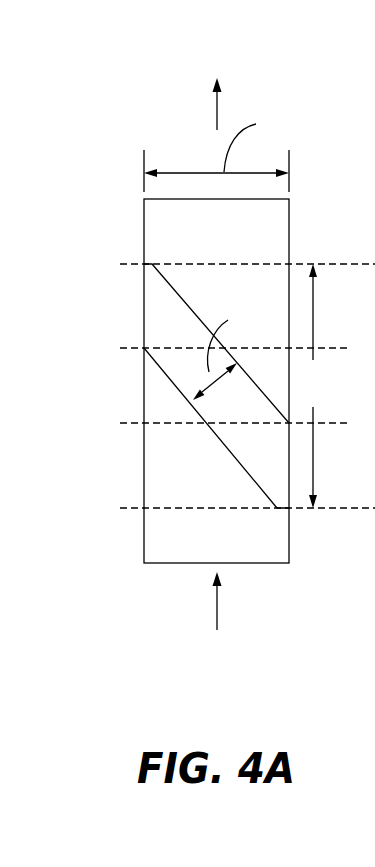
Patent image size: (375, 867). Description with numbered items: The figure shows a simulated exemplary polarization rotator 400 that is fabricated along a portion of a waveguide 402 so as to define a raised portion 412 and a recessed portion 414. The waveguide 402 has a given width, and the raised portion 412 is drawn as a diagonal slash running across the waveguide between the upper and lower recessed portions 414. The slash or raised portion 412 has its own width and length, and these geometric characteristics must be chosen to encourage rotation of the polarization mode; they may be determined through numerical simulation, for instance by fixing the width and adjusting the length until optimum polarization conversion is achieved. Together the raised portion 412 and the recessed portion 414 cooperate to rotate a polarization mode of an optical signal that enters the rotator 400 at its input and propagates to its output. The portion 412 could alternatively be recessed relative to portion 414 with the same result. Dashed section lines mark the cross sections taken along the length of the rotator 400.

The polarization rotator 400 is at (91, 115).
The waveguide 402 is at (306, 198).
The raised portion 412 is at (158, 337).
The recessed portion 414 is at (197, 242).